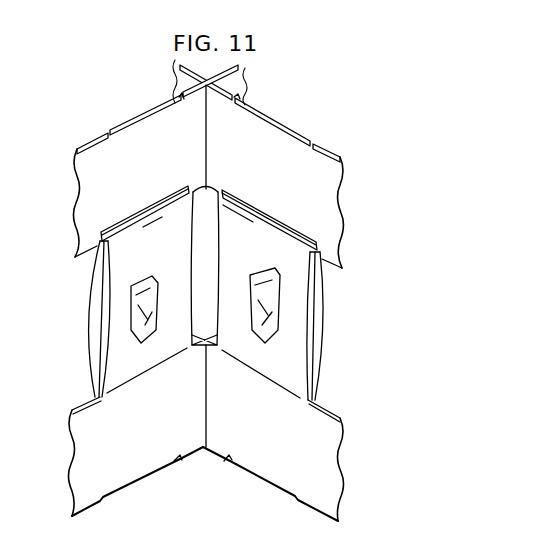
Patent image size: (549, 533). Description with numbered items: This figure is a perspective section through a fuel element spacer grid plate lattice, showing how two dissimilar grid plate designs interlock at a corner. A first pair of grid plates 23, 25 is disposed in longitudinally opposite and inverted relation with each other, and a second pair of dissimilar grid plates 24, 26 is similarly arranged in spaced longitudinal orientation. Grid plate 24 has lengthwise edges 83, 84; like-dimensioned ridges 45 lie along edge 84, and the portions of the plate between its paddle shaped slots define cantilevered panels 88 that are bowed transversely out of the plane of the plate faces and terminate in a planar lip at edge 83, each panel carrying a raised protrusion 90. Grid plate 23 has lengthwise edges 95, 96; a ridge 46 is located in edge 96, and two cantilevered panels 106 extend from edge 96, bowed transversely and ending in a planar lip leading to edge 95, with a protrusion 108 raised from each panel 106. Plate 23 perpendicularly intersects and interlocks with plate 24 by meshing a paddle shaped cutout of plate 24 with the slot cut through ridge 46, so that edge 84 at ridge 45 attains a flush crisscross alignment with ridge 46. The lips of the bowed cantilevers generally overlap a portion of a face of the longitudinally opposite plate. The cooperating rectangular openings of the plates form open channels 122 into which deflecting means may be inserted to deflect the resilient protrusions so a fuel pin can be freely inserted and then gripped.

The grid plate 23 is at (328, 177).
The grid plate 24 is at (77, 173).
The grid plate 25 is at (325, 467).
The grid plate 26 is at (82, 453).
The ridge 45 is at (245, 84).
The ridge 46 is at (176, 88).
The lengthwise edge 83 is at (264, 212).
The lengthwise edge 84 is at (246, 70).
The cantilevered panel 88 is at (90, 325).
The protrusion 90 is at (252, 283).
The lengthwise edge 95 is at (158, 202).
The lengthwise edge 96 is at (179, 64).
The cantilevered panel 106 is at (112, 265).
The protrusion 108 is at (168, 256).
The open channel 122 is at (209, 206).